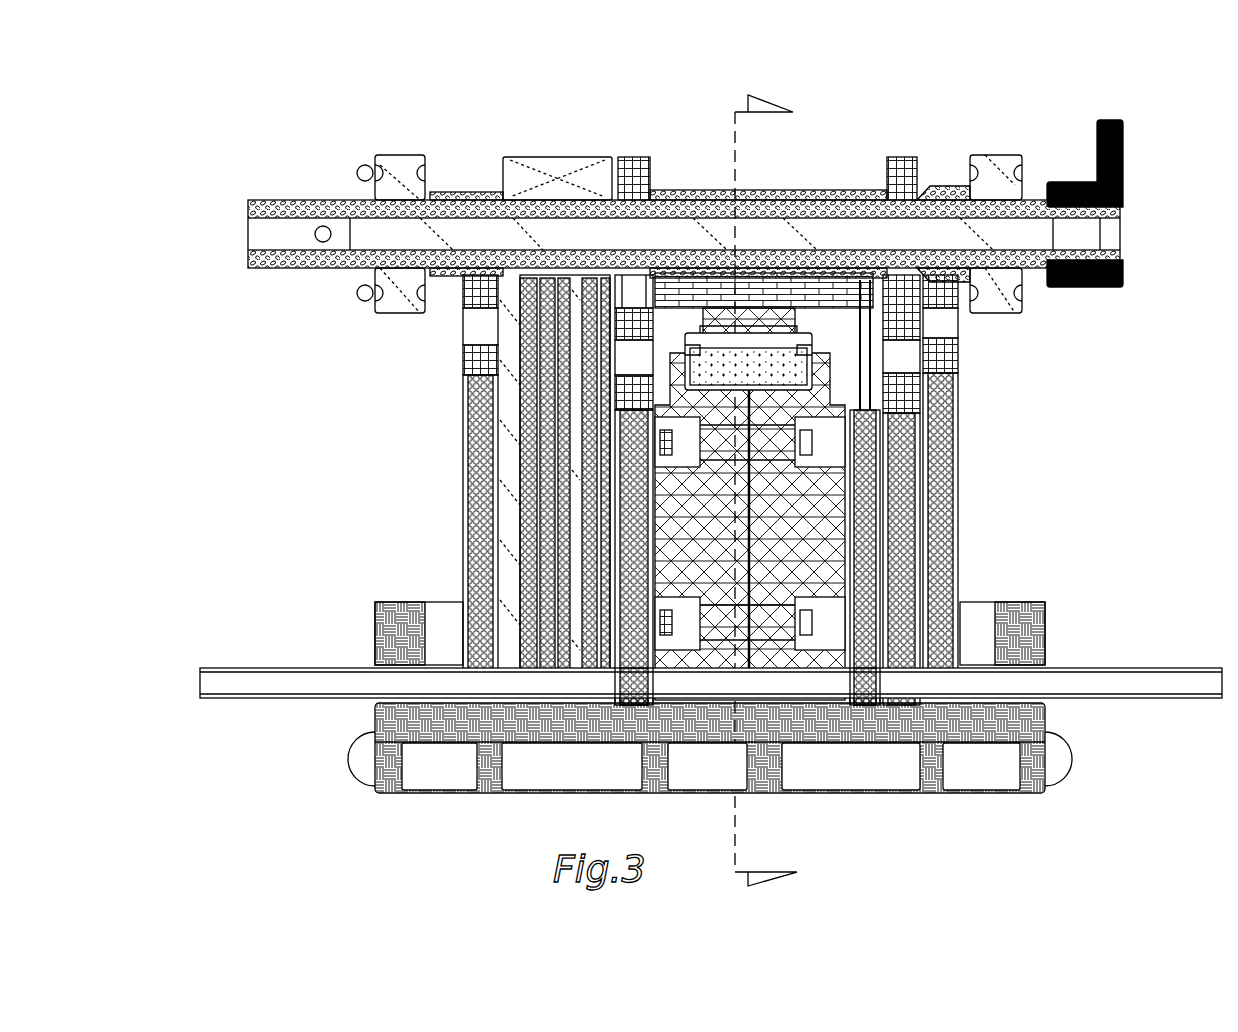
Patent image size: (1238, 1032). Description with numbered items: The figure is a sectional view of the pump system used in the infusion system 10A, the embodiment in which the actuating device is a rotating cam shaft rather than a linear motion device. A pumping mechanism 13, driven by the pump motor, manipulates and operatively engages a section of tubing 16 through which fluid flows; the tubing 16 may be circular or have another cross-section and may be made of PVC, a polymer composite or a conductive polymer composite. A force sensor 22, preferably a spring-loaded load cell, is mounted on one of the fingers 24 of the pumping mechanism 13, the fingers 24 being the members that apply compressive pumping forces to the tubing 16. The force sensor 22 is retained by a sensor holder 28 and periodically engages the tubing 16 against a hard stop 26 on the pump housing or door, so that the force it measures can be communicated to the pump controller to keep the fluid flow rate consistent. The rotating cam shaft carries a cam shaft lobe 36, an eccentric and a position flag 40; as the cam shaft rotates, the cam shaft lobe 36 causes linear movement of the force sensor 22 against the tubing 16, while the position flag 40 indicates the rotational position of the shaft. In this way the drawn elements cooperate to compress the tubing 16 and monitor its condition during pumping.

The infusion system 10A is at (318, 95).
The pumping mechanism 13 is at (502, 137).
The tubing 16 is at (1130, 666).
The force sensor 22 is at (800, 378).
The finger 24 is at (870, 690).
The hard stop 26 is at (1037, 728).
The sensor holder 28 is at (818, 502).
The cam shaft lobe 36 is at (857, 297).
The position flag 40 is at (1123, 172).